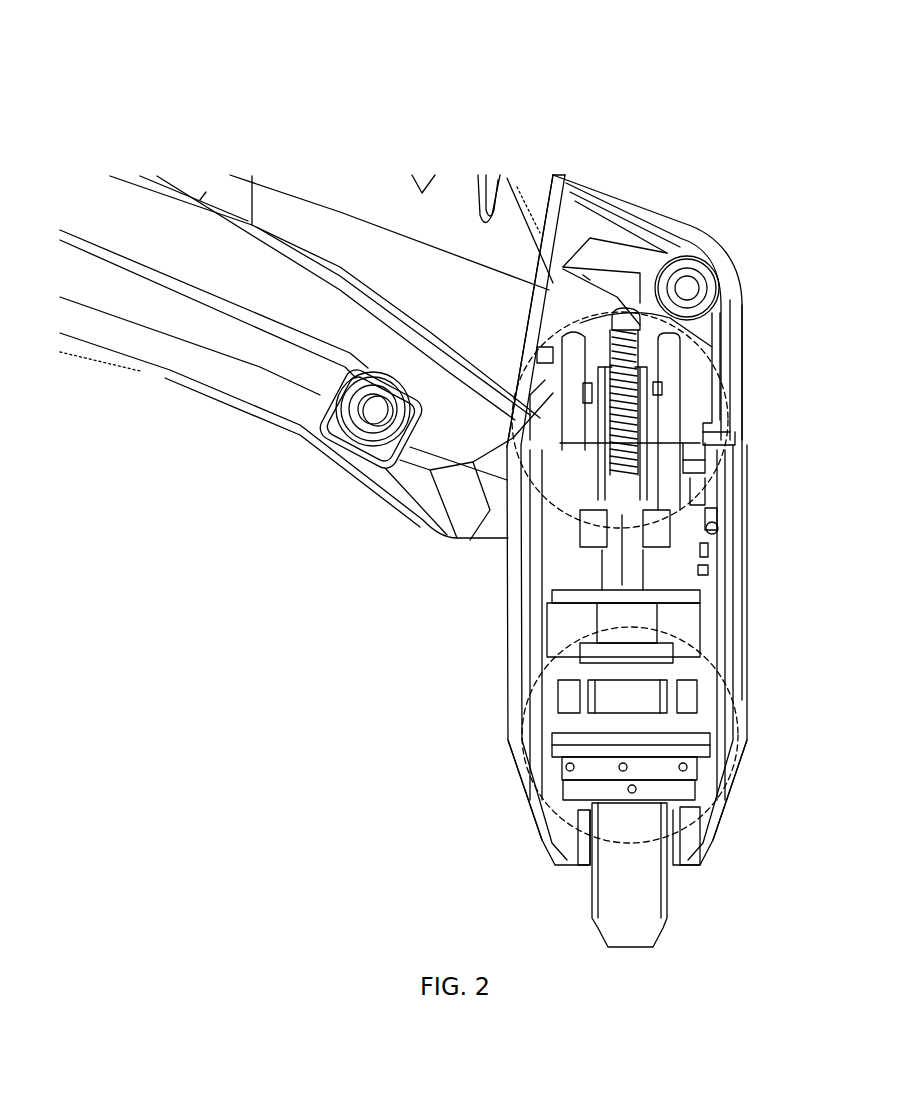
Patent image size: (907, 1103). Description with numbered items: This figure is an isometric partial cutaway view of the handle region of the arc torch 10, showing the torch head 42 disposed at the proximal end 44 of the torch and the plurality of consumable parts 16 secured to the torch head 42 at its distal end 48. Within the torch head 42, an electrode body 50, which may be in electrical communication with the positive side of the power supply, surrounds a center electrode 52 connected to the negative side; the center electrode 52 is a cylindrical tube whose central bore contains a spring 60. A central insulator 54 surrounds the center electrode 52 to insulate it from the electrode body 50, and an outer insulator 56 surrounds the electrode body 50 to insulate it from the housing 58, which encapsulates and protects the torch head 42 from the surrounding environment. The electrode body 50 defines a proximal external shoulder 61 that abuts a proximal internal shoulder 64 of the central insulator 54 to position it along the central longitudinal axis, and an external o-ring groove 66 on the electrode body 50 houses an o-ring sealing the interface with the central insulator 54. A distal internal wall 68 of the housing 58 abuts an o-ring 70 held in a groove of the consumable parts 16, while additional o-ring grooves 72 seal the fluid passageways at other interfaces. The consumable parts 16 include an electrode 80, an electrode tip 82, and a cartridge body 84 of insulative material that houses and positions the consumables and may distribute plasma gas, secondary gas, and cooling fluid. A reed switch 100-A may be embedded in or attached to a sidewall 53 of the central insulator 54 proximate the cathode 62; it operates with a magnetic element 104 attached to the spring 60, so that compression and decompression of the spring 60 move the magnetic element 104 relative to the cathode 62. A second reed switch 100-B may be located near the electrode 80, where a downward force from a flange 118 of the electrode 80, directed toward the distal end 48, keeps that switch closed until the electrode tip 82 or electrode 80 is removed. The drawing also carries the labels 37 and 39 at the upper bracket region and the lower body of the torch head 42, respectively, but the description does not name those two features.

The arc torch 10 is at (232, 485).
The consumable parts 16 is at (797, 589).
The bracket arm 37 is at (635, 315).
The lower body 39 is at (700, 657).
The torch head 42 is at (813, 332).
The proximal end 44 is at (665, 188).
The distal end 48 is at (460, 805).
The electrode body 50 is at (647, 356).
The center electrode 52 is at (600, 600).
The sidewall 53 is at (700, 443).
The central insulator 54 is at (705, 463).
The outer insulator 56 is at (708, 447).
The housing 58 is at (735, 318).
The spring 60 is at (524, 454).
The proximal external shoulder 61 is at (655, 398).
The cathode 62 is at (560, 640).
The proximal internal shoulder 64 is at (700, 430).
The external o-ring groove 66 is at (660, 387).
The distal internal wall 68 is at (720, 513).
The o-ring 70 is at (713, 532).
The o-ring grooves 72 is at (713, 558).
The electrode 80 is at (572, 790).
The electrode tip 82 is at (598, 910).
The cartridge body 84 is at (703, 572).
The reed switch 100-A is at (653, 420).
The reed switch 100-B is at (720, 757).
The magnetic element 104 is at (613, 567).
The flange 118 is at (560, 745).